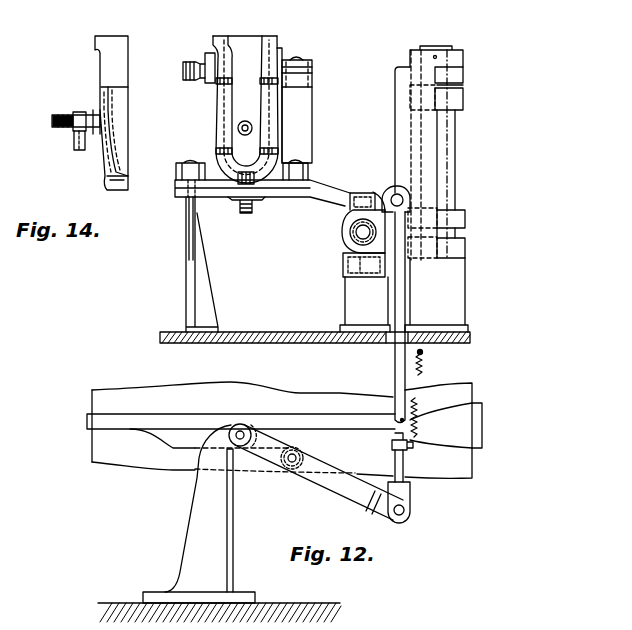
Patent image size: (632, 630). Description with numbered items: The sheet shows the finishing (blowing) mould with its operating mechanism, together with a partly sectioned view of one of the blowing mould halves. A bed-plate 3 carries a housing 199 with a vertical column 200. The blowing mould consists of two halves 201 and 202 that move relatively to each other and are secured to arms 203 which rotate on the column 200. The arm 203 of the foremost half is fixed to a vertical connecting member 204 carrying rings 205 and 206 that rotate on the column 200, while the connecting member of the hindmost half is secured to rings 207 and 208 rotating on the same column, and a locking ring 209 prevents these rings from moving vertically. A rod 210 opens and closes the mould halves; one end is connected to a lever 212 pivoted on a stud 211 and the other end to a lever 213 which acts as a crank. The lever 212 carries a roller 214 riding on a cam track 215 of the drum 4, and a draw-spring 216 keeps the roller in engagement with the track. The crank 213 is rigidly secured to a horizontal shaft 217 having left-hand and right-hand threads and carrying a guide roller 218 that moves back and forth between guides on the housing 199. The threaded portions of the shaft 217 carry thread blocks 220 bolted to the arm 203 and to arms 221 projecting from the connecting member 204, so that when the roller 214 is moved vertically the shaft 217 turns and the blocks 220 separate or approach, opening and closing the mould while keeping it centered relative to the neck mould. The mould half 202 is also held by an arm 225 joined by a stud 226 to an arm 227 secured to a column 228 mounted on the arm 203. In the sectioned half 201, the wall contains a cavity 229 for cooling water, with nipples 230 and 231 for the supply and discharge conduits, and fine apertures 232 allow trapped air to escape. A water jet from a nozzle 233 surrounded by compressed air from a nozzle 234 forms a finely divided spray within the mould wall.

In FIG. 12, the bed-plate 3 is at (471, 338).
In FIG. 12, the drum 4 is at (452, 463).
In FIG. 12, the housing 199 is at (448, 291).
In FIG. 12, the vertical column 200 is at (441, 143).
In FIG. 12, the blowing mould half 201 is at (274, 35).
In FIG. 14, the blowing mould half 202 is at (112, 68).
In FIG. 12, the arm 203 is at (328, 196).
In FIG. 12, the vertical connecting member 204 is at (397, 134).
In FIG. 12, the ring 205 is at (461, 77).
In FIG. 12, the ring 206 is at (459, 222).
In FIG. 12, the ring 207 is at (462, 100).
In FIG. 12, the ring 208 is at (459, 248).
In FIG. 12, the locking ring 209 is at (456, 57).
In FIG. 12, the rod 210 is at (396, 363).
In FIG. 12, the stud 211 is at (240, 424).
In FIG. 12, the lever 212 is at (338, 488).
In FIG. 12, the lever 213 is at (392, 193).
In FIG. 12, the roller 214 is at (289, 471).
In FIG. 12, the cam track 215 is at (475, 428).
In FIG. 12, the draw-spring 216 is at (423, 369).
In FIG. 12, the horizontal shaft 217 is at (346, 246).
In FIG. 12, the guide roller 218 is at (349, 234).
In FIG. 12, the thread block 220 is at (346, 217).
In FIG. 12, the arm 221 is at (389, 272).
In FIG. 12, the arm 225 is at (279, 58).
In FIG. 12, the stud 226 is at (314, 70).
In FIG. 12, the arm 227 is at (314, 85).
In FIG. 12, the column 228 is at (303, 126).
In FIG. 12, the cavity 229 is at (216, 97).
In FIG. 12, the nipple 230 is at (252, 200).
In FIG. 12, the nipple 231 is at (192, 62).
In FIG. 12, the fine apertures 232 is at (214, 150).
In FIG. 14, the nozzle 233 is at (58, 113).
In FIG. 14, the nozzle 234 is at (80, 150).